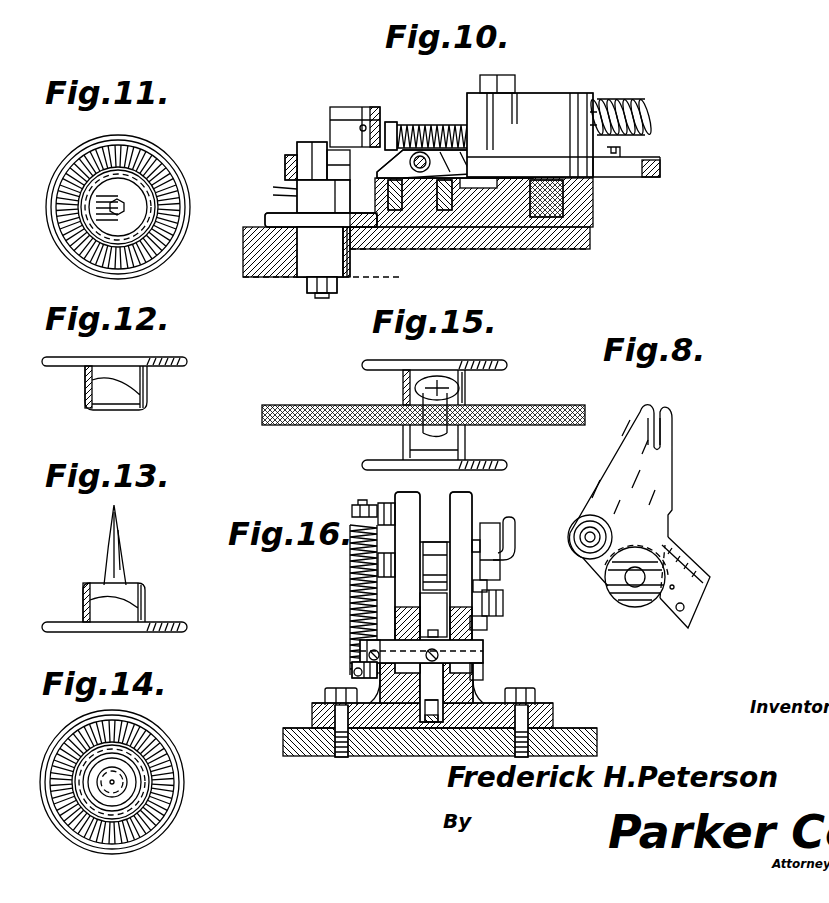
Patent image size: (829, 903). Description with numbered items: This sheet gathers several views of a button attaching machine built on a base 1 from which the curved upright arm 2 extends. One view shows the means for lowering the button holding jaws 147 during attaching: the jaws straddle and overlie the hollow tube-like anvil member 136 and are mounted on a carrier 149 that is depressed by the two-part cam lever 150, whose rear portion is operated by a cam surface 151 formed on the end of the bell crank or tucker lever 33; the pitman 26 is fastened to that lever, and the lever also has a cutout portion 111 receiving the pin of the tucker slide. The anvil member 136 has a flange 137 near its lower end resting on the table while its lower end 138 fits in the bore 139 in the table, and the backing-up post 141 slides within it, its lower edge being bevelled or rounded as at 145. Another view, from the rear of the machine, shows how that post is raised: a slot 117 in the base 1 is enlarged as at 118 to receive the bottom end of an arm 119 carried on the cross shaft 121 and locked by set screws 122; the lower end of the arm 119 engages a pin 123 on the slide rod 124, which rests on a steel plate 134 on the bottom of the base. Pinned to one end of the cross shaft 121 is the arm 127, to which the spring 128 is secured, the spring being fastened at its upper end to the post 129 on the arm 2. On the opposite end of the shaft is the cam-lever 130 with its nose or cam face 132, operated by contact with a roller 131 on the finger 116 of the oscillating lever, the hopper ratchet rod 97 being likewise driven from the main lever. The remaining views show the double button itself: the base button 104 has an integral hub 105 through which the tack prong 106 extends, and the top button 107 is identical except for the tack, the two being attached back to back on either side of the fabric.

In FIG. 10, the base 1 is at (460, 240).
In FIG. 16, the base 1 is at (553, 711).
In FIG. 16, the curved upright arm 2 is at (460, 510).
In FIG. 10, the pitman 26 is at (643, 110).
In FIG. 8, the bell crank or tucker lever 33 is at (660, 483).
In FIG. 16, the rod 97 is at (512, 535).
In FIG. 13, the base button 104 is at (158, 622).
In FIG. 14, the base button 104 is at (168, 758).
In FIG. 15, the base button 104 is at (507, 467).
In FIG. 13, the hub 105 is at (85, 592).
In FIG. 14, the hub 105 is at (167, 795).
In FIG. 15, the hub 105 is at (405, 435).
In FIG. 13, the tack prong 106 is at (121, 543).
In FIG. 14, the tack prong 106 is at (114, 784).
In FIG. 11, the top button 107 is at (157, 170).
In FIG. 12, the top button 107 is at (131, 383).
In FIG. 15, the top button 107 is at (483, 368).
In FIG. 8, the cutout portion 111 is at (652, 430).
In FIG. 16, the finger 116 is at (486, 572).
In FIG. 16, the slot 117 is at (390, 728).
In FIG. 16, the enlarged portion of slot 118 is at (483, 680).
In FIG. 16, the arm 119 is at (428, 728).
In FIG. 16, the cross shaft 121 is at (480, 653).
In FIG. 16, the set screws 122 is at (433, 637).
In FIG. 16, the pin 123 is at (410, 740).
In FIG. 16, the slide rod 124 is at (435, 727).
In FIG. 16, the arm 127 is at (352, 676).
In FIG. 16, the spring 128 is at (357, 606).
In FIG. 16, the post 129 is at (363, 508).
In FIG. 16, the cam-lever 130 is at (487, 628).
In FIG. 16, the roller 131 is at (503, 598).
In FIG. 16, the nose or cam face 132 is at (485, 587).
In FIG. 16, the steel plate 134 is at (365, 728).
In FIG. 10, the hollow tube-like member 136 is at (307, 203).
In FIG. 10, the flange 137 is at (273, 218).
In FIG. 10, the lower end 138 is at (312, 257).
In FIG. 10, the bore 139 is at (350, 257).
In FIG. 10, the backing-up post 141 is at (318, 278).
In FIG. 10, the bevelled or rounded edge 145 is at (322, 296).
In FIG. 10, the jaws 147 is at (305, 145).
In FIG. 10, the carrier 149 is at (288, 160).
In FIG. 10, the cam lever 150 is at (387, 160).
In FIG. 10, the cam surface 151 is at (537, 160).
In FIG. 8, the cam surface 151 is at (700, 560).